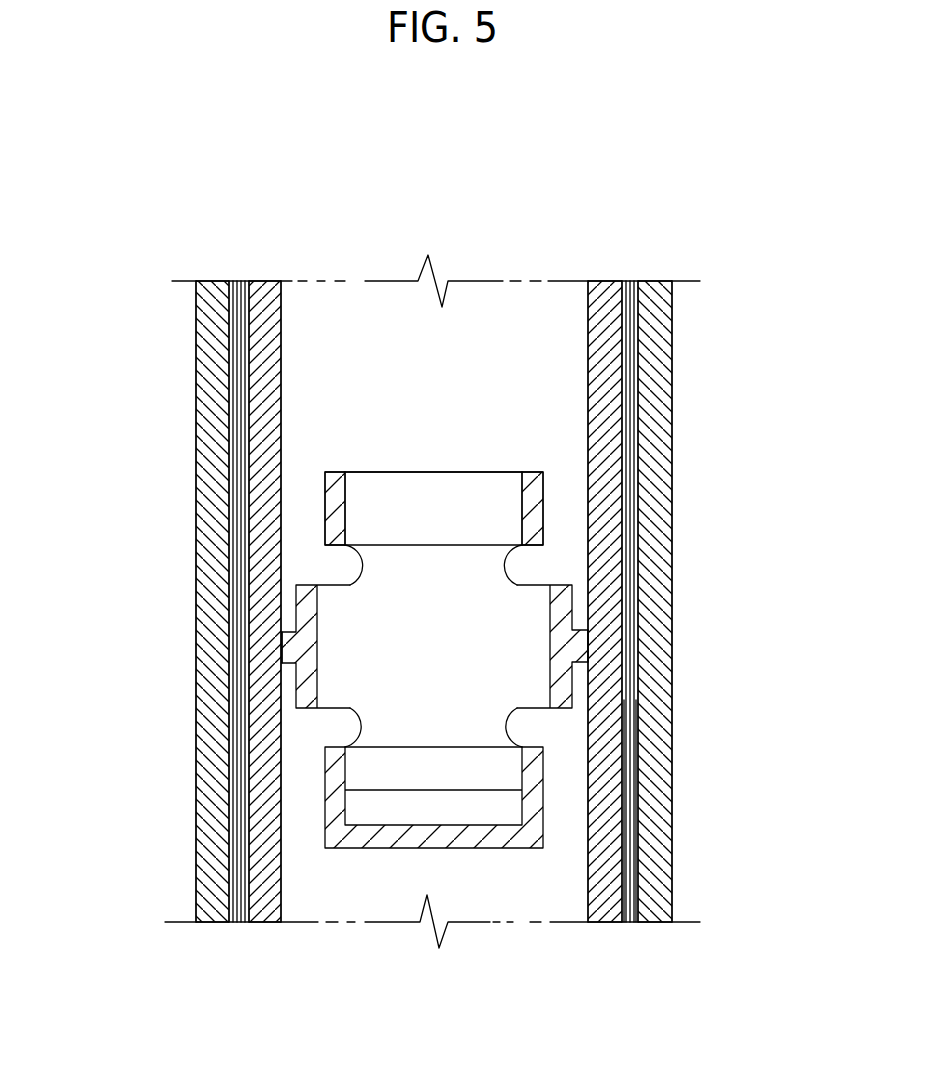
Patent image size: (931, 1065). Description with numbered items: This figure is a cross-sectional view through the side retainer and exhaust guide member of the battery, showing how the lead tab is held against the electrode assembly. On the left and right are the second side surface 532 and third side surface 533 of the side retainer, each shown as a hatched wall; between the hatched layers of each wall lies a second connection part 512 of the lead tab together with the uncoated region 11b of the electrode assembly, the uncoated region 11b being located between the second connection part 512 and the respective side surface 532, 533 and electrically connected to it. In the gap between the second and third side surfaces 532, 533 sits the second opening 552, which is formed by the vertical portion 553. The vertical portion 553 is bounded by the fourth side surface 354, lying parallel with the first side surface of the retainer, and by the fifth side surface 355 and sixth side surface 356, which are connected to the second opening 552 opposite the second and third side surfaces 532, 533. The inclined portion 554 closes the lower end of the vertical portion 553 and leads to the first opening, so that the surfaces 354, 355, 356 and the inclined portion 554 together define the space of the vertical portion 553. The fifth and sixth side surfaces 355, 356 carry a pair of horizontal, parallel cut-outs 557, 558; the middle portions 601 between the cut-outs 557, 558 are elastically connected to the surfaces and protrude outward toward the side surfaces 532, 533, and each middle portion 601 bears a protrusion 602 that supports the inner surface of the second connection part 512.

The uncoated region 11b is at (628, 812).
The second connection part 512 is at (603, 432).
The second side surface 532 is at (210, 527).
The third side surface 533 is at (655, 517).
The second opening 552 is at (373, 471).
The vertical portion 553 is at (434, 446).
The fourth side surface 354 is at (462, 505).
The fifth side surface 355 is at (335, 505).
The sixth side surface 356 is at (532, 478).
The cut-out 557 is at (513, 565).
The cut-out 558 is at (513, 727).
The middle portion 601 is at (560, 608).
The protrusion 602 is at (282, 648).
The inclined portion 554 is at (378, 806).